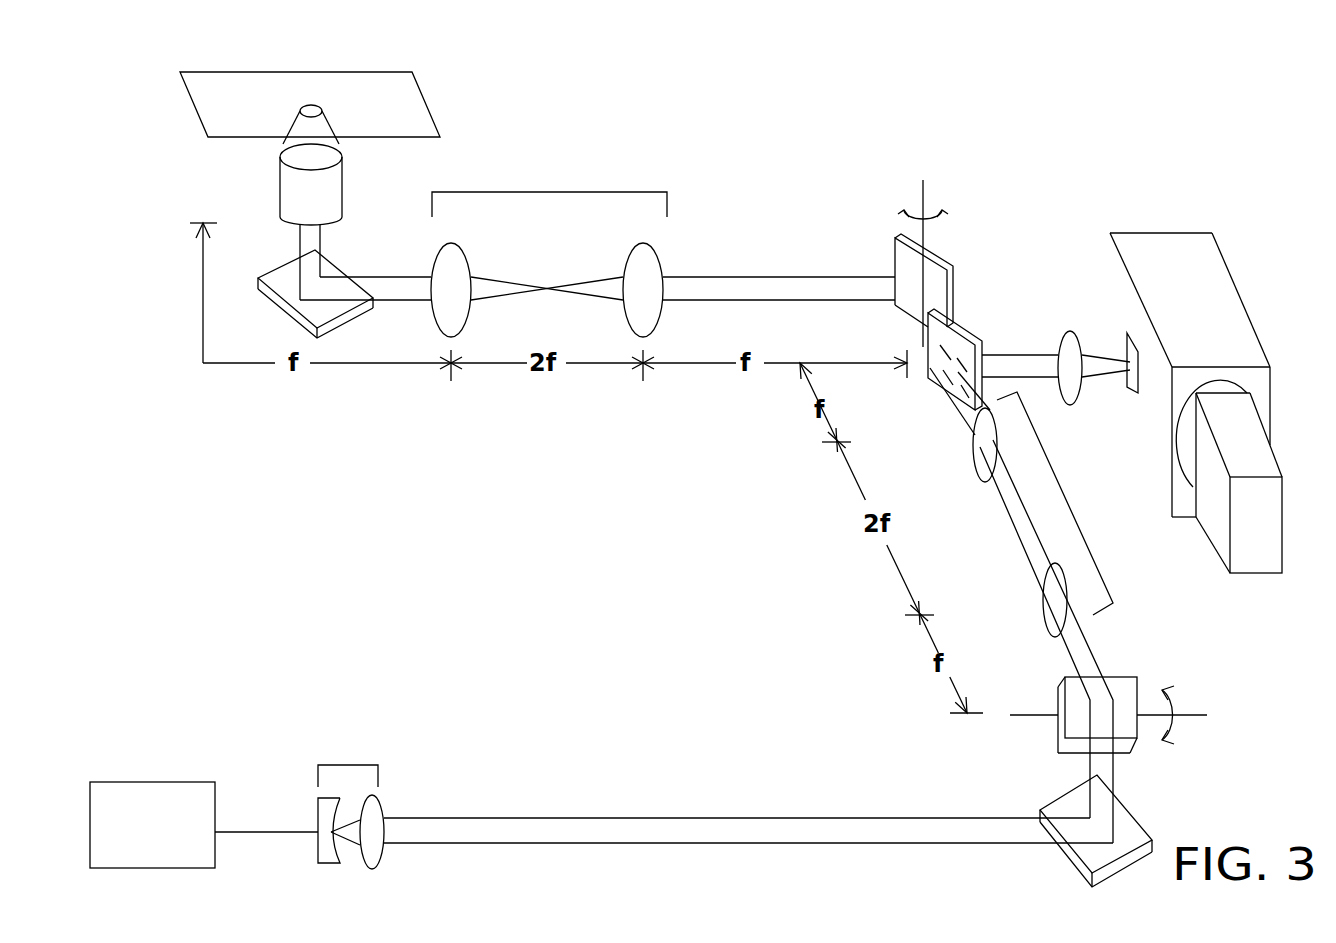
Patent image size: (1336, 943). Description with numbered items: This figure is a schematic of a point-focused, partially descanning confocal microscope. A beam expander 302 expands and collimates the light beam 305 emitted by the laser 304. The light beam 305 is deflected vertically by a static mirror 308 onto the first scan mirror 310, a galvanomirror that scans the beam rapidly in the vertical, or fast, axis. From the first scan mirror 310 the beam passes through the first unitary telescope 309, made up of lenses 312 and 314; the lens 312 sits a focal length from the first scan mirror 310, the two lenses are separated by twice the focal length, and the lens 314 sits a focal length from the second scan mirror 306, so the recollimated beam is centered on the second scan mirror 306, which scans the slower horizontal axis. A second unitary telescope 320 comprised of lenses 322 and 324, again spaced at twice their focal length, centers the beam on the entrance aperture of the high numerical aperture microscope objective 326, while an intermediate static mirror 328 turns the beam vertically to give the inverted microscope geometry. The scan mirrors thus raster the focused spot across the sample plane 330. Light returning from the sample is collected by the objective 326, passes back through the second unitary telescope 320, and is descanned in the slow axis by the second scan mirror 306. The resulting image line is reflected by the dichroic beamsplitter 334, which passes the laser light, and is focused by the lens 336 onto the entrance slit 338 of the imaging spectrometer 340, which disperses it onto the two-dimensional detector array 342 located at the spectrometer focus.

The beam expander 302 is at (351, 798).
The laser 304 is at (134, 782).
The light beam 305 is at (847, 815).
The second scan mirror 306 is at (920, 270).
The static mirror 308 is at (1143, 823).
The first unitary telescope 309 is at (1060, 483).
The first scan mirror 310 is at (1057, 750).
The lens 312 is at (1045, 606).
The lens 314 is at (975, 452).
The second unitary telescope 320 is at (549, 187).
The lens 322 is at (631, 261).
The lens 324 is at (451, 243).
The microscope objective 326 is at (288, 182).
The intermediate static mirror 328 is at (332, 272).
The sample plane 330 is at (415, 105).
The dichroic beamsplitter 334 is at (962, 330).
The lens 336 is at (1058, 351).
The entrance slit 338 is at (1125, 356).
The imaging spectrometer 340 is at (1213, 292).
The detector array 342 is at (1260, 545).